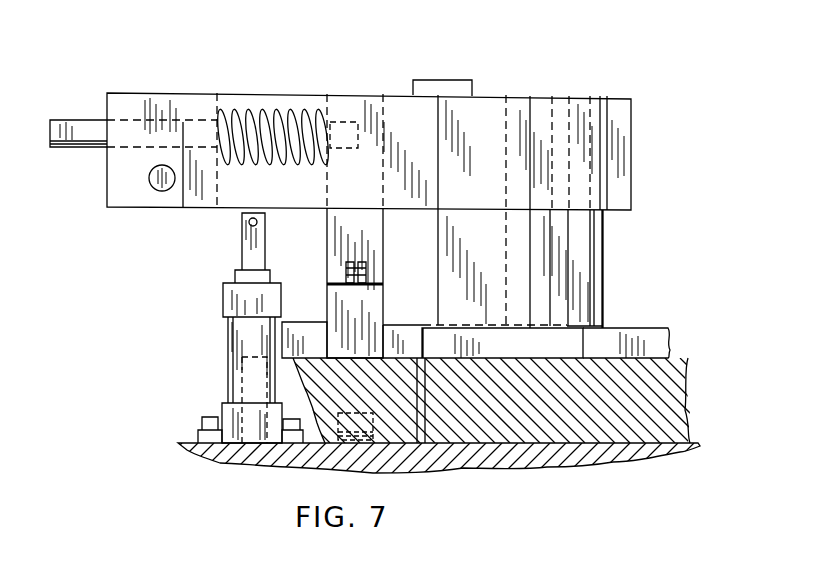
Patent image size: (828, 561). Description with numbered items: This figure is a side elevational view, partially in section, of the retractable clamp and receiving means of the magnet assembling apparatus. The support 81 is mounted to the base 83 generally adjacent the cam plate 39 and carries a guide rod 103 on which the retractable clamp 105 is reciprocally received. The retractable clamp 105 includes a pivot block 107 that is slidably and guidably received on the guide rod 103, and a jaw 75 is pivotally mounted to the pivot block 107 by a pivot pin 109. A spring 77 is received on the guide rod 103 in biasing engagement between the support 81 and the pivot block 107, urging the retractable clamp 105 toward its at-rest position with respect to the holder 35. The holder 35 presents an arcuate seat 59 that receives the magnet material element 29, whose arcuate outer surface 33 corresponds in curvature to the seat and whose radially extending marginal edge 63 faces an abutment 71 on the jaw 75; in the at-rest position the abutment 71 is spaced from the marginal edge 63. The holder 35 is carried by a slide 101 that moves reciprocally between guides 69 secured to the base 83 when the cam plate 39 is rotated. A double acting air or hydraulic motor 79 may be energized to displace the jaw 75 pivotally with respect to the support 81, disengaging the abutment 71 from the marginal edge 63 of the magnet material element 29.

The magnet material element 29 is at (616, 233).
The arcuate outer surface 33 is at (505, 118).
The holder 35 is at (445, 244).
The cam plate 39 is at (673, 397).
The arcuate seat 59 is at (507, 137).
The marginal edge 63 is at (597, 263).
The guide 69 is at (638, 328).
The abutment 71 is at (632, 155).
The jaw 75 is at (585, 97).
The spring 77 is at (270, 113).
The double acting motor 79 is at (228, 343).
The support 81 is at (327, 256).
The base 83 is at (187, 442).
The slide 101 is at (537, 343).
The guide rod 103 is at (78, 128).
The retractable clamp 105 is at (170, 253).
The pivot block 107 is at (222, 186).
The pivot pin 109 is at (147, 182).